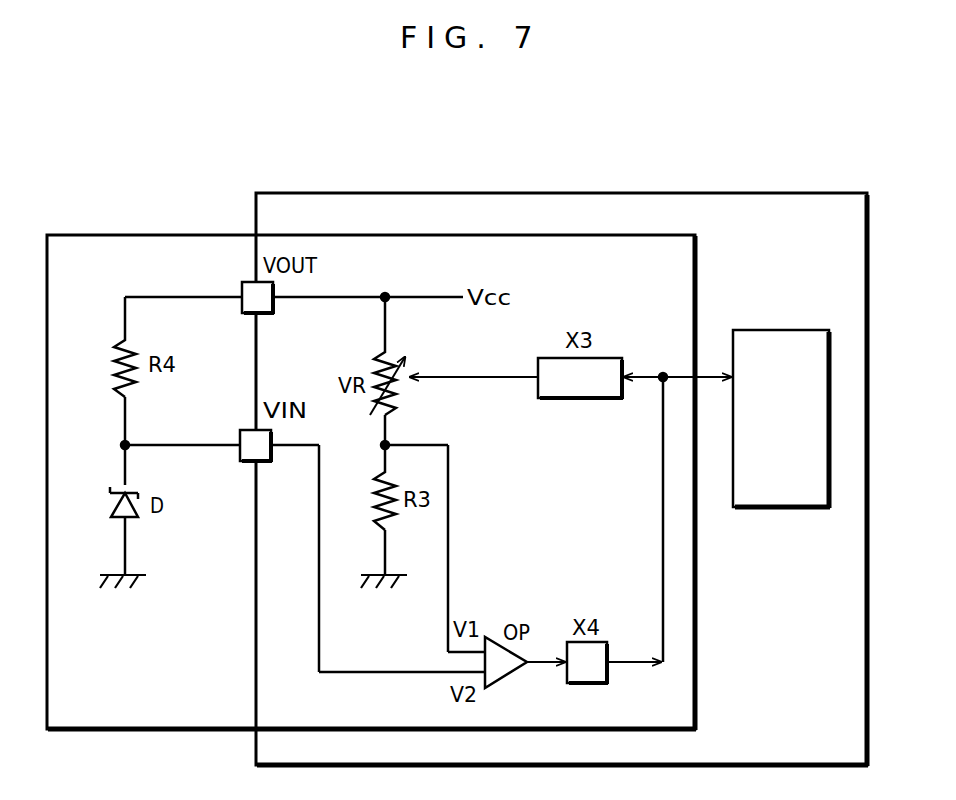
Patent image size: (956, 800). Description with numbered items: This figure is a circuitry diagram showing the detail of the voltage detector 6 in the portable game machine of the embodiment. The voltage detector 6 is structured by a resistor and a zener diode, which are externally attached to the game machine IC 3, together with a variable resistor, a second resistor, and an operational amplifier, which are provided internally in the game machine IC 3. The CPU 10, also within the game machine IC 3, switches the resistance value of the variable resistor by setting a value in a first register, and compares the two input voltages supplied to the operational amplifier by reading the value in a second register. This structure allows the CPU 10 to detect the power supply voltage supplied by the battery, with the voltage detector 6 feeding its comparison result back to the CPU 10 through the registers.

The game machine IC 3 is at (800, 193).
The voltage detector 6 is at (152, 233).
The CPU 10 is at (795, 330).